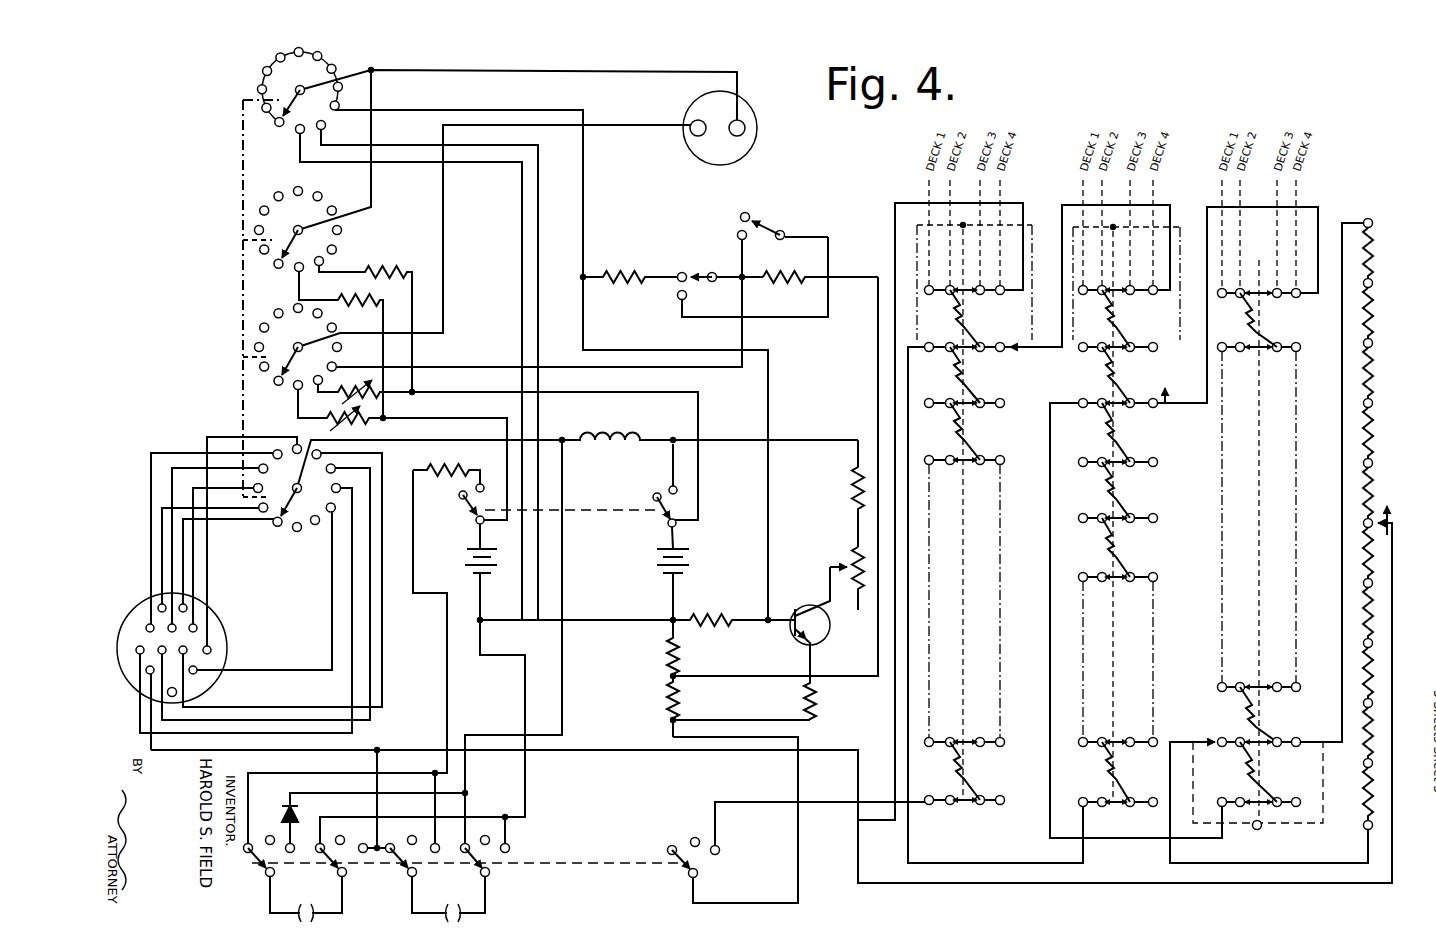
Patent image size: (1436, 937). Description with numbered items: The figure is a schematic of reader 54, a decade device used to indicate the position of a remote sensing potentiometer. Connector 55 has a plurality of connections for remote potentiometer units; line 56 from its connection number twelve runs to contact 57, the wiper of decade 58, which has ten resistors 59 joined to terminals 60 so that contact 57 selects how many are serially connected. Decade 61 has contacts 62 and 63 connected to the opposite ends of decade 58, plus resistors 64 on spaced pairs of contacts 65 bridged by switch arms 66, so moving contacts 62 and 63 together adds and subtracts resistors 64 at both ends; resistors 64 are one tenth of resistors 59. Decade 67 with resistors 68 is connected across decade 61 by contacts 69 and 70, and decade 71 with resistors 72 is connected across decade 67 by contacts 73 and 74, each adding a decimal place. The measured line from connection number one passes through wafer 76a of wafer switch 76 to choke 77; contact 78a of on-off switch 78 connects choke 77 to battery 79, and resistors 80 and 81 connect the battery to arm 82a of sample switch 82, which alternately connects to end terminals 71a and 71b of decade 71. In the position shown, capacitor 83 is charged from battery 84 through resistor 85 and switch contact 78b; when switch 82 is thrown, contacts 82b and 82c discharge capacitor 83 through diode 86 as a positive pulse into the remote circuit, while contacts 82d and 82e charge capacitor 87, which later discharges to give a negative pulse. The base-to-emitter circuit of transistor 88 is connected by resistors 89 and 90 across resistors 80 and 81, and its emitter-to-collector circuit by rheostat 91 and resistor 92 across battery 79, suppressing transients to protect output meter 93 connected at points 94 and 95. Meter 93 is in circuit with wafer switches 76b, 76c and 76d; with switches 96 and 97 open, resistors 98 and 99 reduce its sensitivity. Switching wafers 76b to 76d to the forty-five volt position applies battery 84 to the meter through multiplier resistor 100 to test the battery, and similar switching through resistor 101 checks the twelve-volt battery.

The reader 54 is at (212, 216).
The connector 55 is at (232, 642).
The line 56 is at (988, 888).
The contact 57 is at (1391, 520).
The decade 58 is at (1380, 442).
The resistors 59 is at (1362, 800).
The terminals 60 is at (1364, 829).
The decade 61 is at (1306, 588).
The contact 62 is at (1310, 752).
The contact 63 is at (1214, 738).
The resistors 64 is at (1262, 722).
The contacts 65 is at (1243, 682).
The switch arms 66 is at (1276, 660).
The decade 67 is at (1166, 588).
The resistors 68 is at (1122, 493).
The contact 69 is at (1075, 403).
The contact 70 is at (1166, 412).
The decade 71 is at (1008, 550).
The end terminal 71a is at (928, 808).
The end terminal 71b is at (1000, 296).
The resistors 72 is at (1003, 406).
The contact 73 is at (948, 296).
The contact 74 is at (1022, 352).
The wafer switch 76 is at (240, 306).
The wafer 76a is at (284, 528).
The wafer switch 76b is at (333, 338).
The wafer switch 76c is at (314, 200).
The wafer switch 76d is at (332, 68).
The choke 77 is at (621, 435).
The on-off switch 78 is at (625, 514).
The contact 78a is at (683, 506).
The switch contact 78b is at (460, 507).
The battery 79 is at (690, 562).
The resistor 80 is at (668, 657).
The resistor 81 is at (669, 704).
The sample switch 82 is at (624, 862).
The arm 82a is at (686, 866).
The contact 82b is at (258, 872).
The contact 82c is at (348, 875).
The contact 82d is at (403, 866).
The contact 82e is at (498, 862).
The capacitor 83 is at (302, 906).
The battery 84 is at (484, 577).
The resistor 85 is at (458, 465).
The diode 86 is at (285, 812).
The capacitor 87 is at (449, 906).
The transistor 88 is at (795, 637).
The resistor 89 is at (720, 617).
The resistor 90 is at (805, 703).
The rheostat 91 is at (854, 552).
The resistor 92 is at (855, 488).
The output meter 93 is at (752, 143).
The point 94 is at (790, 616).
The point 95 is at (668, 681).
The switch 96 is at (772, 223).
The switch 97 is at (701, 270).
The resistor 98 is at (615, 270).
The resistor 99 is at (786, 266).
The meter multiplier resistor 100 is at (360, 412).
The variable resistor 101 is at (372, 398).